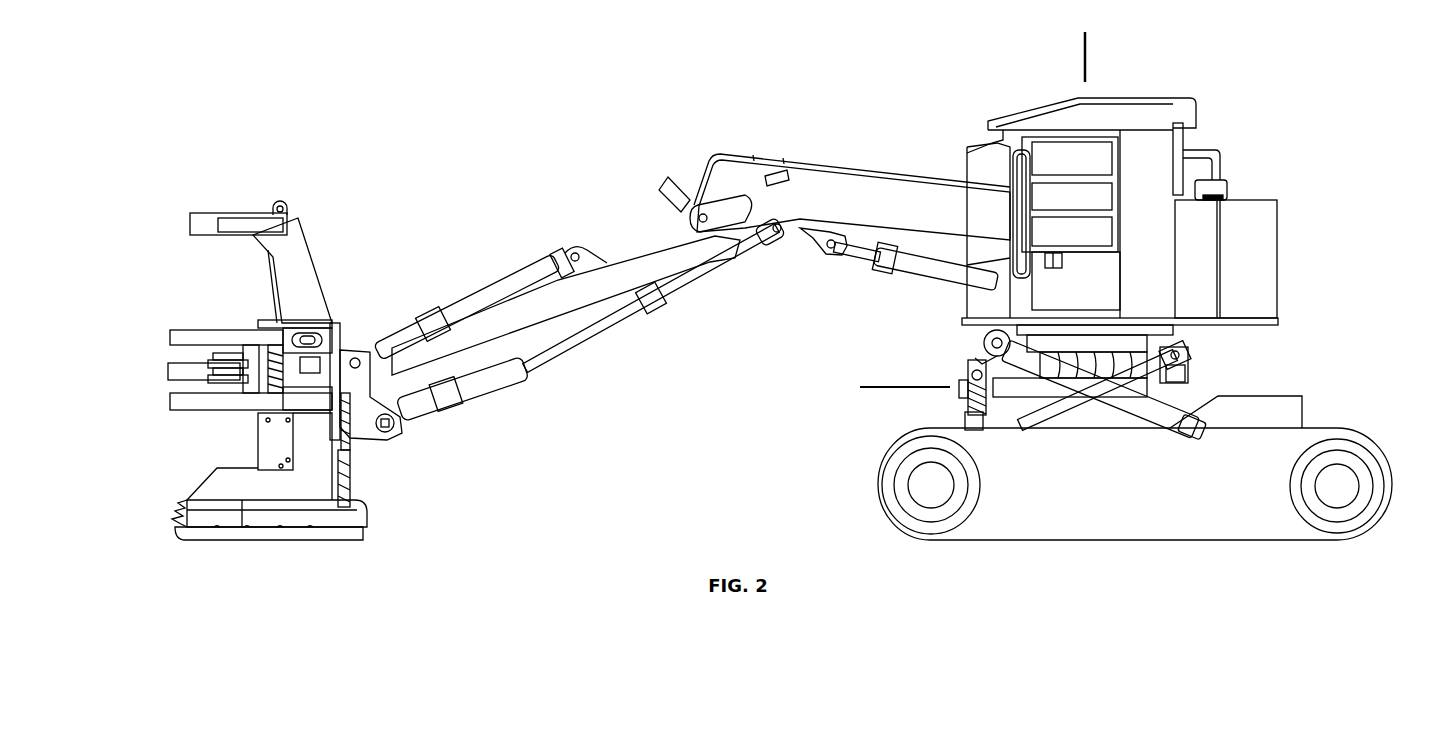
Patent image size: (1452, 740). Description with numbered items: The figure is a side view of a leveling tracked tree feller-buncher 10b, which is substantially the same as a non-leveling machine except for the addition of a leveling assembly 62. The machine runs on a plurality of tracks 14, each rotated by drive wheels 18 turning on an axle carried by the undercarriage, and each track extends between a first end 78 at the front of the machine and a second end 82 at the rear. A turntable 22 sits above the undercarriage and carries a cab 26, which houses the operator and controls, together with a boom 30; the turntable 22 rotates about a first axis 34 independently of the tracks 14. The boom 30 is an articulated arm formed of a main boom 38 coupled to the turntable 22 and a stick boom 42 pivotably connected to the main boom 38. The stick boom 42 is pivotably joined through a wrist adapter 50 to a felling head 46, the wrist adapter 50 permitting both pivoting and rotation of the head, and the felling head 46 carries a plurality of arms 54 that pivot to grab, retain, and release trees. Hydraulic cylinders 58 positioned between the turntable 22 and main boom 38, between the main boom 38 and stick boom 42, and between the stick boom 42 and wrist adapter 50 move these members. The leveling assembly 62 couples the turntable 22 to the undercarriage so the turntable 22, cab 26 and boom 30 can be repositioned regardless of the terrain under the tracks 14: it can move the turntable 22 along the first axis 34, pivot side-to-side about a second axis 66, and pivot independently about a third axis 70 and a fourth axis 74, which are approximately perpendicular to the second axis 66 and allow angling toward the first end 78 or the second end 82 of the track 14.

The leveling tree feller-buncher 10b is at (1297, 118).
The tracks 14 is at (1327, 427).
The drive wheels 18 is at (921, 508).
The turntable 22 is at (1282, 318).
The cab 26 is at (1030, 137).
The boom 30 is at (707, 130).
The first axis 34 is at (1087, 50).
The main boom 38 is at (841, 182).
The stick boom 42 is at (483, 355).
The felling head 46 is at (308, 241).
The wrist adapter 50 is at (372, 443).
The arms 54 is at (188, 327).
The hydraulic cylinders 58 is at (484, 289).
The leveling assembly 62 is at (1200, 371).
The second axis 66 is at (872, 391).
The third axis 70 is at (984, 342).
The fourth axis 74 is at (1187, 352).
The first end of the track 78 is at (880, 477).
The second end of the track 82 is at (1384, 466).